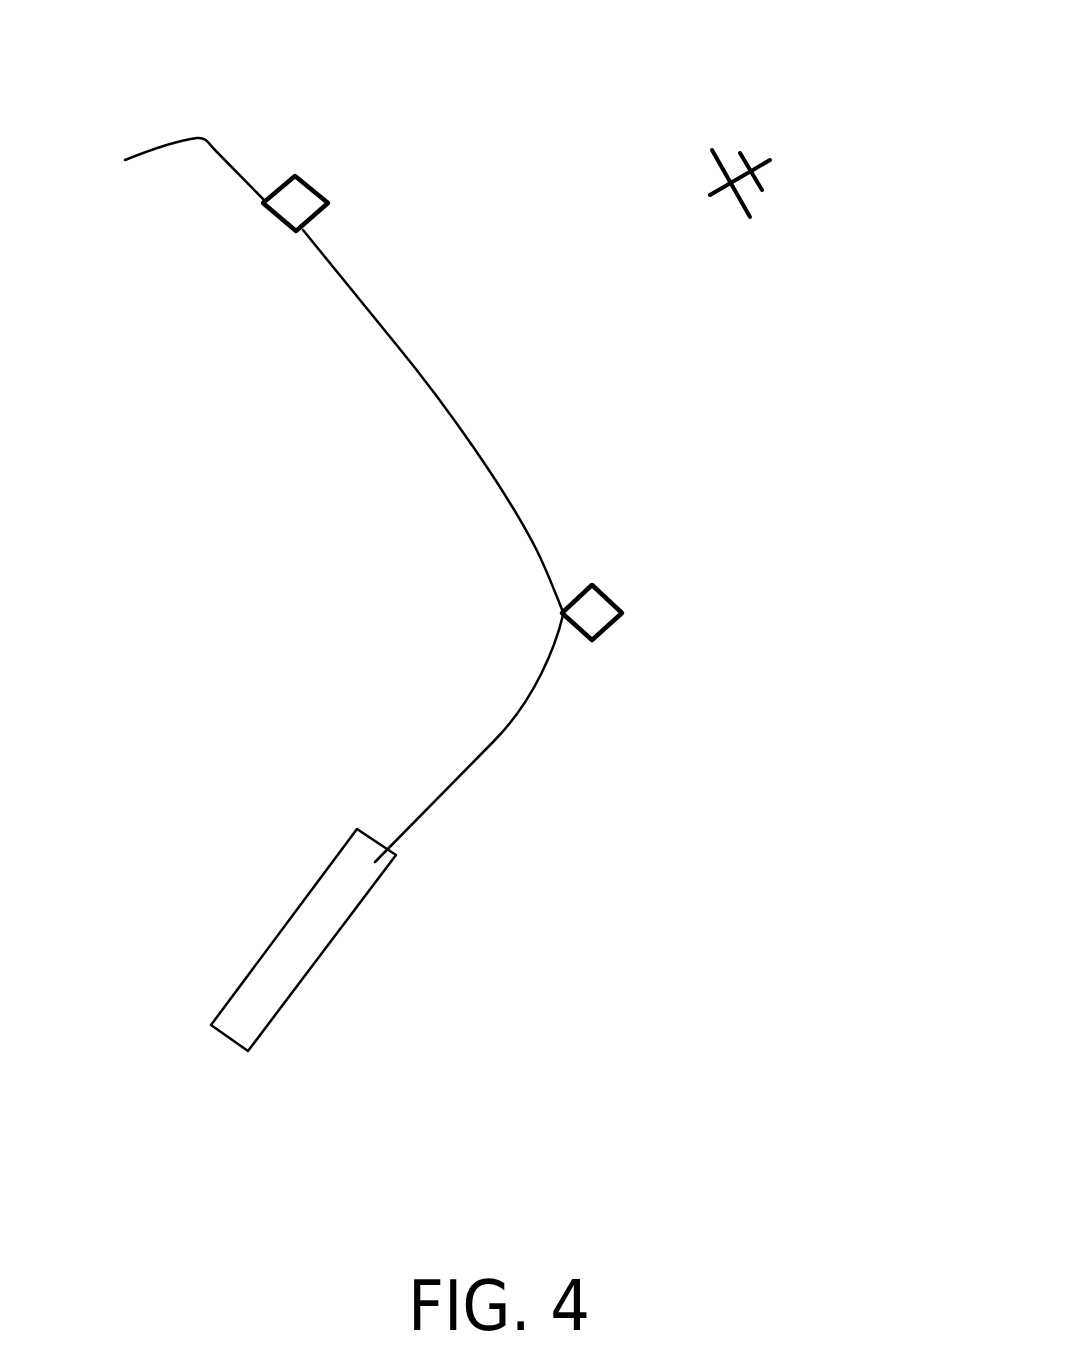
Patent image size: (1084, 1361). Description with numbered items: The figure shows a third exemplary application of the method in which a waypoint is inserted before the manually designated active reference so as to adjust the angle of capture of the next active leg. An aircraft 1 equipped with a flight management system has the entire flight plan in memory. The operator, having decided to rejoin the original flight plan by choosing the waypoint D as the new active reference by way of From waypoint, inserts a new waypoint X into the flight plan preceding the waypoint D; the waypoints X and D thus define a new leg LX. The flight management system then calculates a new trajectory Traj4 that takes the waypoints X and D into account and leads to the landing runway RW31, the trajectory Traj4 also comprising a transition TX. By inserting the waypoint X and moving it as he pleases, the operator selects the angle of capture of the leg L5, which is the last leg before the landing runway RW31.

The waypoint X is at (189, 171).
The trajectory Traj4 is at (401, 431).
The aircraft 1 is at (752, 168).
The leg LX is at (470, 440).
The transition TX is at (533, 547).
The waypoint D is at (607, 593).
The leg L5 is at (493, 742).
The landing runway RW31 is at (350, 884).